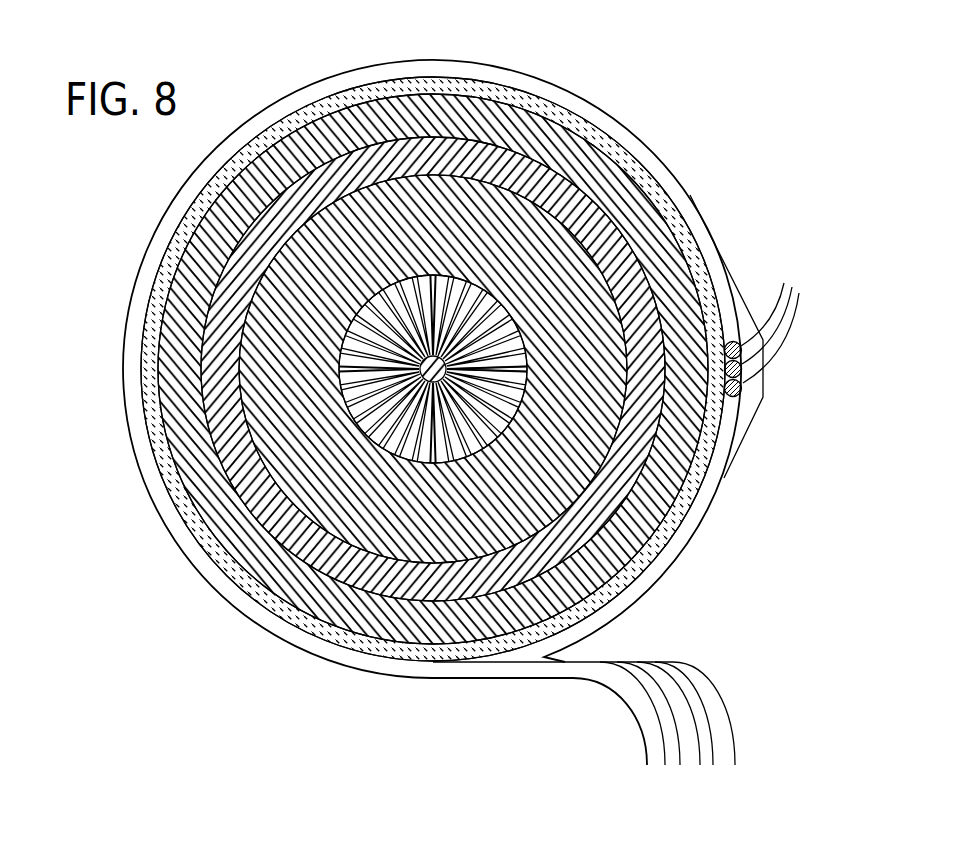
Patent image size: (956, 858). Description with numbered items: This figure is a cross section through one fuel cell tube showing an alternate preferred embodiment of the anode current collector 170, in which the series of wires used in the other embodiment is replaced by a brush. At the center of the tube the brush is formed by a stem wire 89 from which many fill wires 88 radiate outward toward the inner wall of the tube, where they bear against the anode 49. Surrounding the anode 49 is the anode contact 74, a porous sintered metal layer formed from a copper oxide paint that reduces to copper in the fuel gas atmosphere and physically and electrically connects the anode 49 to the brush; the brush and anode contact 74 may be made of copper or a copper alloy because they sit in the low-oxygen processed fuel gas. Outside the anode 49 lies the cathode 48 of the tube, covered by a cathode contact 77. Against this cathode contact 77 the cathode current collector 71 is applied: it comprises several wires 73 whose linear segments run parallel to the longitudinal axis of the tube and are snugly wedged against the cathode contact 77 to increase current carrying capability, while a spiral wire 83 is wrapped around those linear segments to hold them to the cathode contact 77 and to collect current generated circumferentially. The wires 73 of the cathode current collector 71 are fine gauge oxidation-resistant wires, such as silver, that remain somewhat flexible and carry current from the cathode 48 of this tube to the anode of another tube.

The cathode 48 is at (197, 440).
The anode 49 is at (333, 476).
The cathode current collector 71 is at (720, 689).
The wire 73 is at (562, 738).
The anode contact 74 is at (433, 373).
The cathode contact 77 is at (642, 179).
The spiral wire 83 is at (712, 247).
The fill wire 88 is at (462, 294).
The stem wire 89 is at (337, 358).
The anode current collector 170 is at (487, 437).